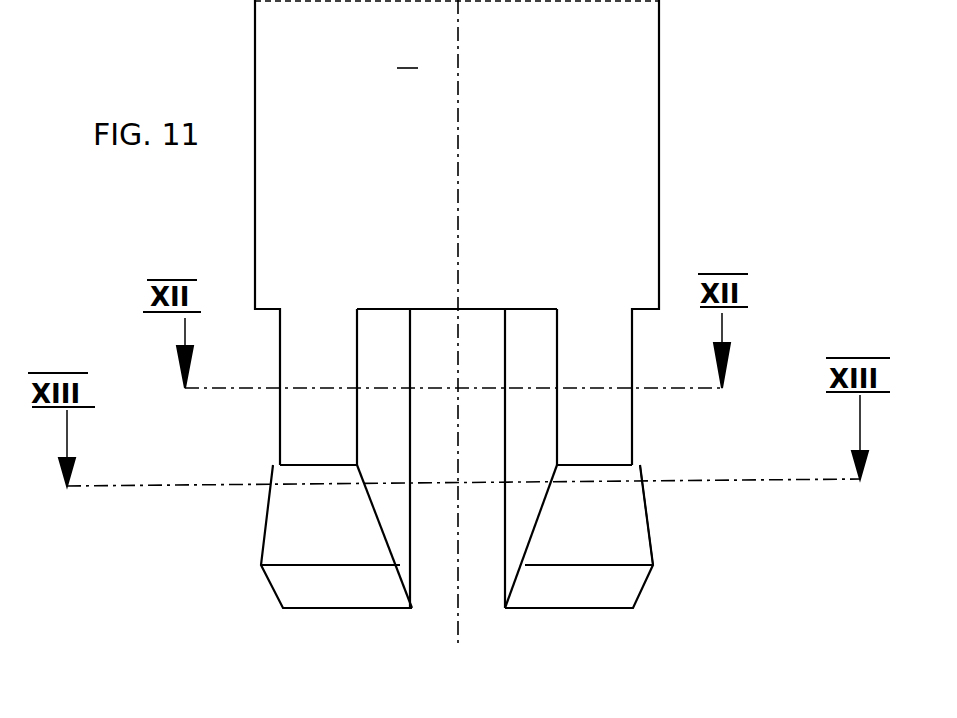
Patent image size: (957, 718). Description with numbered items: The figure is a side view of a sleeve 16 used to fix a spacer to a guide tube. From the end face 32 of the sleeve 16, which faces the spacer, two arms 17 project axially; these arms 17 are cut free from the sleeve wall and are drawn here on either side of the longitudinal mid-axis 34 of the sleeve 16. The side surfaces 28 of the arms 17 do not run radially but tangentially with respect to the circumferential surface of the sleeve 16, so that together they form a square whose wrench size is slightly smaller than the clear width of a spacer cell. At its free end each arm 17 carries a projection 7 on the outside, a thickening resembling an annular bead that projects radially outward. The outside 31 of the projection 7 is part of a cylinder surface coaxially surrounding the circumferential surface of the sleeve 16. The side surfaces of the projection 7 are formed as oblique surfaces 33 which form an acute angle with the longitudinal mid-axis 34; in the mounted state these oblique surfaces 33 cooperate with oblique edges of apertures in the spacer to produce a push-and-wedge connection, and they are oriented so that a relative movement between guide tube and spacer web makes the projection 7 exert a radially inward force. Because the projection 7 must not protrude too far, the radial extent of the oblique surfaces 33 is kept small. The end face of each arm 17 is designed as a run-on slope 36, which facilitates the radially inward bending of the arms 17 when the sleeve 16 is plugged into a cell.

The projection 7 is at (643, 492).
The sleeve 16 is at (635, 155).
The arm 17 is at (300, 413).
The side surface 28 is at (530, 413).
The outside 31 is at (315, 518).
The end face 32 is at (478, 326).
The oblique surface 33 is at (262, 520).
The longitudinal mid-axis 34 is at (458, 108).
The run-on slope 36 is at (318, 593).